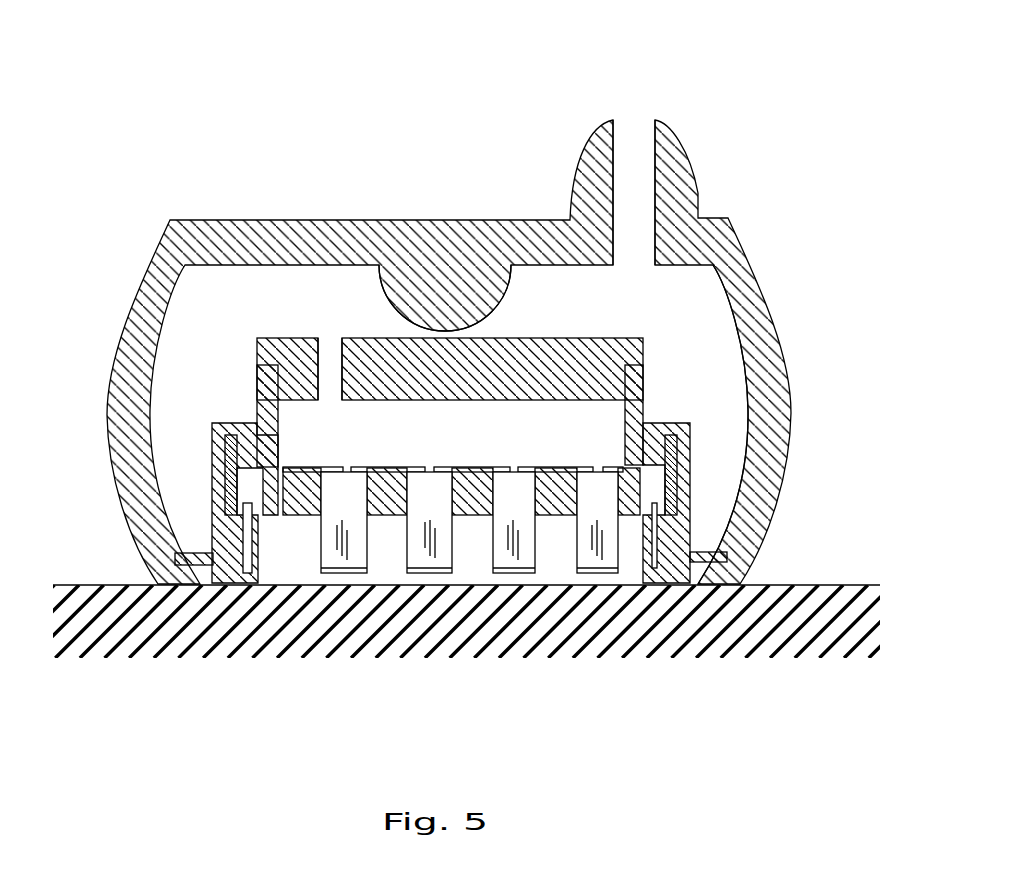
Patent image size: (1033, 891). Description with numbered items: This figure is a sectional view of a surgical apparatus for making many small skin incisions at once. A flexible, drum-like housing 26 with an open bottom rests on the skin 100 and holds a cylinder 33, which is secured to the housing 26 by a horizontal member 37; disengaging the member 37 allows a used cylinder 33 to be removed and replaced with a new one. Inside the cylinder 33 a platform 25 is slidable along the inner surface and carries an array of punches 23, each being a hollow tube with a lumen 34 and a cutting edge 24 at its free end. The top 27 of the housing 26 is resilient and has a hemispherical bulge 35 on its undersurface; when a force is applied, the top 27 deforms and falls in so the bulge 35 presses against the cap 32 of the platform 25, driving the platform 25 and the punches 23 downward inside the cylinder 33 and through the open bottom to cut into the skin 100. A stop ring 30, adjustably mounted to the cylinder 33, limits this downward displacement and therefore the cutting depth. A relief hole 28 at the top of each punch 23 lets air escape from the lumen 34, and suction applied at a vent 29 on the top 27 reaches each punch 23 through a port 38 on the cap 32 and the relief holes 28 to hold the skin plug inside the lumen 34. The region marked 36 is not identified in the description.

The punch 23 is at (355, 562).
The cutting edge 24 is at (421, 570).
The platform 25 is at (392, 477).
The flexible drum-like housing 26 is at (775, 442).
The top 27 is at (333, 228).
The relief hole 28 is at (345, 467).
The vent 29 is at (640, 125).
The stop ring 30 is at (657, 578).
The cap 32 is at (553, 348).
The cylinder 33 is at (220, 507).
The lumen 34 is at (417, 505).
The hemispherical bulge 35 is at (443, 277).
The space 36 is at (708, 351).
The horizontal member 37 is at (183, 560).
The port 38 is at (330, 345).
The skin 100 is at (788, 620).